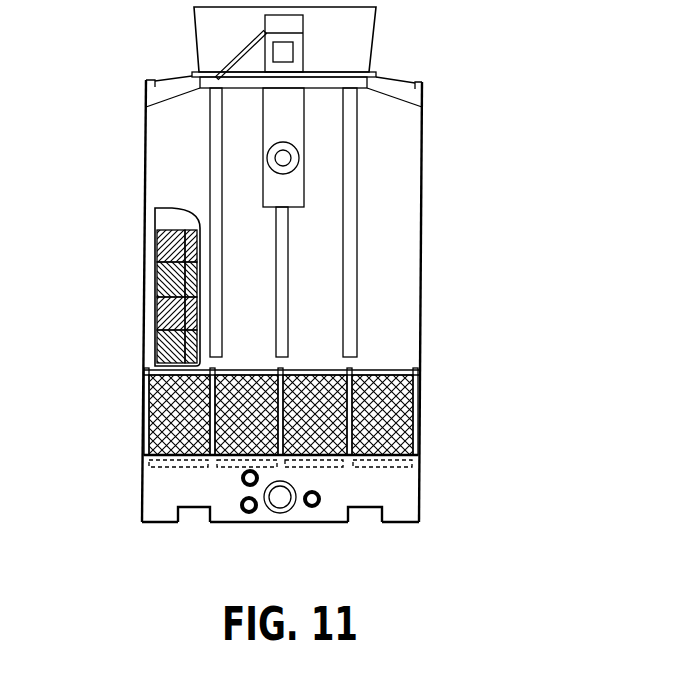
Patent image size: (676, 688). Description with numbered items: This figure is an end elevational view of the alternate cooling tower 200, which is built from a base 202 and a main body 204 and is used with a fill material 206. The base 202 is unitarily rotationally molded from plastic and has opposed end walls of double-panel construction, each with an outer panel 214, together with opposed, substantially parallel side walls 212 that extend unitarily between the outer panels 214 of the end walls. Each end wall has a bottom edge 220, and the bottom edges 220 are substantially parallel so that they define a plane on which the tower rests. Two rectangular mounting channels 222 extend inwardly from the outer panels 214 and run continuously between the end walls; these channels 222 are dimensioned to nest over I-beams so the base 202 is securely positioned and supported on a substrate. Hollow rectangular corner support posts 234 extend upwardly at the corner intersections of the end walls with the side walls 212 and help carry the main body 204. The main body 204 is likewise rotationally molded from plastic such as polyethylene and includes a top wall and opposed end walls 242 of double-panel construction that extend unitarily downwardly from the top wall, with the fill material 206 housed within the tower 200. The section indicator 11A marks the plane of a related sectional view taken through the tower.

The cooling tower 200 is at (461, 173).
The base 202 is at (126, 504).
The main body 204 is at (429, 119).
The fill material 206 is at (156, 246).
The side walls 212 is at (145, 468).
The outer panel 214 is at (415, 493).
The bottom edge 220 is at (155, 522).
The rectangular mounting channels 222 is at (181, 508).
The corner support posts 234 is at (145, 388).
The end walls 242 is at (150, 126).
The section line 11A is at (167, 178).